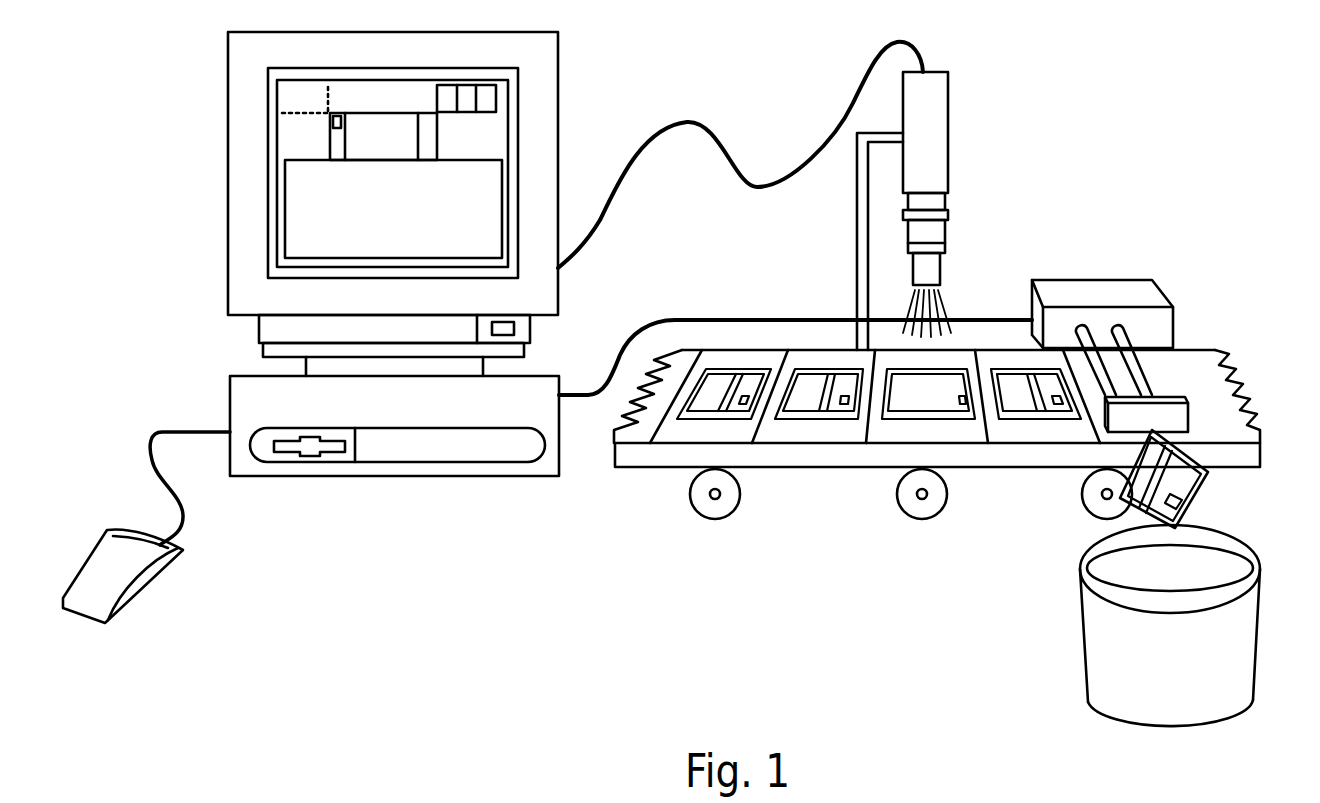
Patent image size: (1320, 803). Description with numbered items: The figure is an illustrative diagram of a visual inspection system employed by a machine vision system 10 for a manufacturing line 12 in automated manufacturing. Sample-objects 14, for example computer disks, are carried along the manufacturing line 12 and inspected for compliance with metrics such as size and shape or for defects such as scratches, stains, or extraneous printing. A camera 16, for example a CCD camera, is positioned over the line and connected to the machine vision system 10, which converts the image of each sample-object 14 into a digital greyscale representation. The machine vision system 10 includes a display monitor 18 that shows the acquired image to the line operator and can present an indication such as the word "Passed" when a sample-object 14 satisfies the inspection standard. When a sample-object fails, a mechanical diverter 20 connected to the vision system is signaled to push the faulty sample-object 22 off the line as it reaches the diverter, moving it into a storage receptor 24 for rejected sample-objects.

The machine vision system 10 is at (547, 325).
The manufacturing line 12 is at (680, 538).
The sample-objects 14 is at (950, 400).
The camera 16 is at (949, 123).
The display monitor 18 is at (560, 132).
The mechanical diverter 20 is at (1174, 330).
The faulty sample-object 22 is at (1198, 492).
The storage receptor 24 is at (1080, 616).